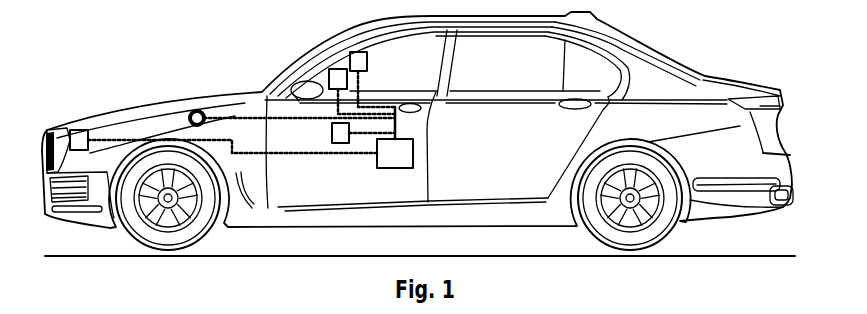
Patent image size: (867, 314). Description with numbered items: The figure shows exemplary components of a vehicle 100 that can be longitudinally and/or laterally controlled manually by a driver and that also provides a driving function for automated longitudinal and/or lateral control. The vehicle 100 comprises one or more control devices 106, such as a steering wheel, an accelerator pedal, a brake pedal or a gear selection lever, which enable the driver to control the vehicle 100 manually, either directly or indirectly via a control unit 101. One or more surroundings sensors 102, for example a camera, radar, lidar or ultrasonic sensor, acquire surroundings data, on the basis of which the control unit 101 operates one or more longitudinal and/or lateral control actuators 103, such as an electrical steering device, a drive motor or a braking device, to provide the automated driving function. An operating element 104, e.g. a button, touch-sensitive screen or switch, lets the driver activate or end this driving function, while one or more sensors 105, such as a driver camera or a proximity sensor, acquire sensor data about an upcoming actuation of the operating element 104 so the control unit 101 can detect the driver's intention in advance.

The vehicle 100 is at (158, 40).
The control unit 101 is at (377, 155).
The surroundings sensor 102 is at (73, 130).
The longitudinal and/or lateral control actuator 103 is at (196, 111).
The operating element 104 is at (329, 78).
The sensor 105 is at (350, 58).
The control device 106 is at (333, 128).